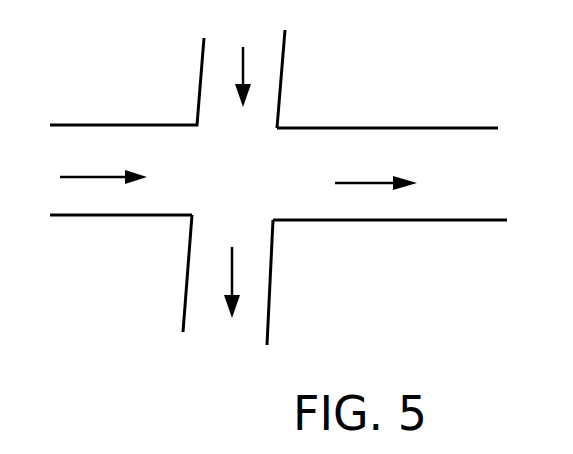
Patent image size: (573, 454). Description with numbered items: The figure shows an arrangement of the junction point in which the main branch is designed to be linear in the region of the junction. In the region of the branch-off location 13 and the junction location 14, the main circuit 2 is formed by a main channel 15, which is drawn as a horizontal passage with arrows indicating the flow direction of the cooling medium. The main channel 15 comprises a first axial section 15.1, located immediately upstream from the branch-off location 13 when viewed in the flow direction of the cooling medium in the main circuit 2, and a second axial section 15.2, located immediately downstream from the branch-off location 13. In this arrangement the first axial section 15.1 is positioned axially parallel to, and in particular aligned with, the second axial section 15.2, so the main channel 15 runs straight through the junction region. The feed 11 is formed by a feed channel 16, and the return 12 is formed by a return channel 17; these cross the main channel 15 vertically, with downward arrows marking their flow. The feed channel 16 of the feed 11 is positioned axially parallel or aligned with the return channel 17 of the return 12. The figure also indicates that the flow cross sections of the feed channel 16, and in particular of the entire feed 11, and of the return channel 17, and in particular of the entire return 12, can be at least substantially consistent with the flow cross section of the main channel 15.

The main circuit 2 is at (142, 198).
The feed 11 is at (213, 310).
The return 12 is at (262, 105).
The branch-off location 13 is at (248, 212).
The junction location 14 is at (247, 128).
The main channel 15 is at (433, 155).
The first axial section 15.1 is at (97, 123).
The second axial section 15.2 is at (428, 220).
The feed channel 16 is at (268, 327).
The return channel 17 is at (285, 53).